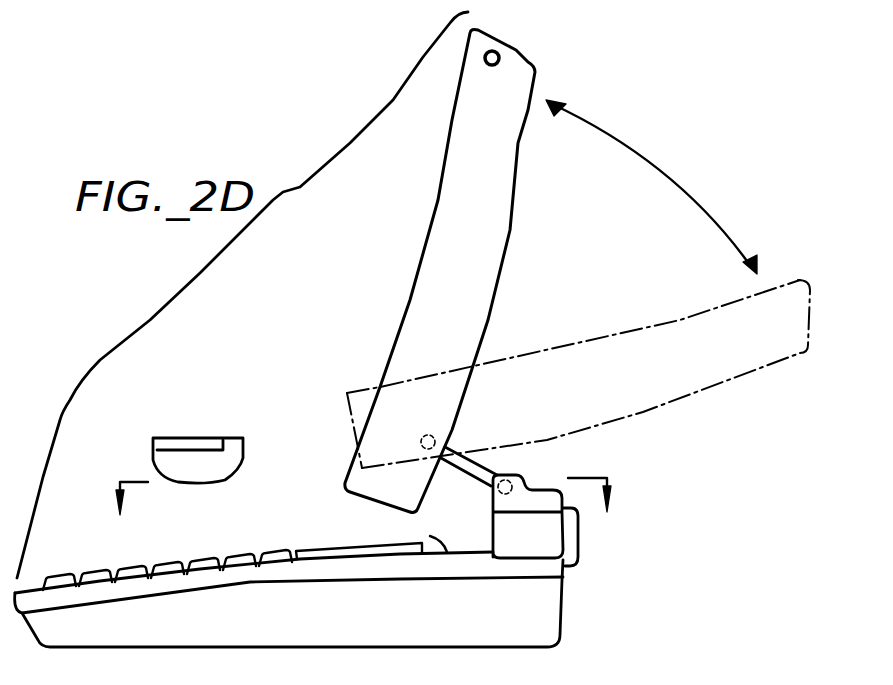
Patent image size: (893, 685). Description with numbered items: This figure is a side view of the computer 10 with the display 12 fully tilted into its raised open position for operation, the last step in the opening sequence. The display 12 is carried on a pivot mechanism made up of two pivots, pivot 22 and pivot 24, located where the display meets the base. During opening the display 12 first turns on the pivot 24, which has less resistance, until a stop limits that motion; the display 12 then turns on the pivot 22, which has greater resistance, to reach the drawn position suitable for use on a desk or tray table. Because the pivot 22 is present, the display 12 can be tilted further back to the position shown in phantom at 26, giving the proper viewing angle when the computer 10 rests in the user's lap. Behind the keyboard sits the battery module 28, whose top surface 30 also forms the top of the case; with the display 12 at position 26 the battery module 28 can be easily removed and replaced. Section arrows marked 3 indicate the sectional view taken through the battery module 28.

The computer 10 is at (221, 403).
The display 12 is at (508, 215).
The pivot 22 is at (437, 440).
The pivot 24 is at (515, 483).
The phantom position of display 26 is at (627, 418).
The battery module 28 is at (430, 537).
The top surface 30 is at (200, 437).
The section line for FIG. 3 is at (365, 511).